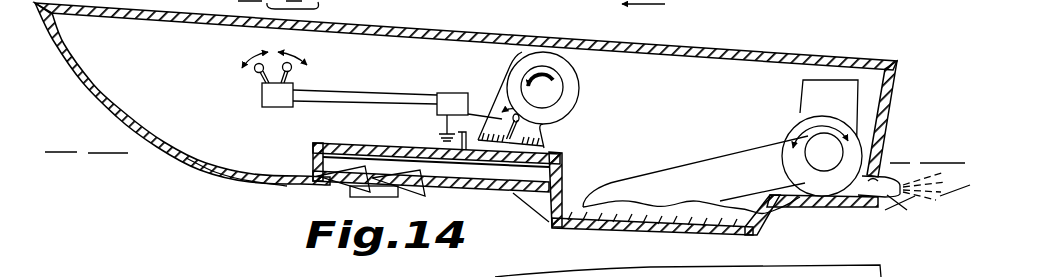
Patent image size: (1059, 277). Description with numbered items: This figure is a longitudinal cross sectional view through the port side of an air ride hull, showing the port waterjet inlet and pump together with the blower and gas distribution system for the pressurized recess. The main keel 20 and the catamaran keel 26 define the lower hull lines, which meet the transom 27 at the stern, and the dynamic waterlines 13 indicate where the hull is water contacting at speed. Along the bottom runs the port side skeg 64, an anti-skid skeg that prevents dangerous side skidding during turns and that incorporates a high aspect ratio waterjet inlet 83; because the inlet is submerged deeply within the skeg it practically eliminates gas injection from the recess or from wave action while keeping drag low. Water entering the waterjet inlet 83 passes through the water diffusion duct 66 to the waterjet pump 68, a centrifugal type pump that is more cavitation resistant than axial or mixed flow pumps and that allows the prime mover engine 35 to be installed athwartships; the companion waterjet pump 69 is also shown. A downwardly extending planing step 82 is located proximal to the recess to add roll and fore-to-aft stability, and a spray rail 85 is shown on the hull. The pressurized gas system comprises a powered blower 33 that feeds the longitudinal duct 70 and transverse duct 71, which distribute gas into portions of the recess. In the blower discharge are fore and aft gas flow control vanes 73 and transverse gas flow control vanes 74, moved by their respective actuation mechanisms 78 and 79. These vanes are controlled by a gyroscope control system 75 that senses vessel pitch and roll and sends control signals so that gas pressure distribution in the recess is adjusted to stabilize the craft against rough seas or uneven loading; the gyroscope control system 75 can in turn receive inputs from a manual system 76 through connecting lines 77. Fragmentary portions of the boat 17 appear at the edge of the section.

The dynamic waterline 13 is at (167, 153).
The boat 17 is at (624, 9).
The main keel 20 is at (97, 88).
The catamaran keel 26 is at (233, 180).
The transom 27 is at (902, 84).
The powered blower 33 is at (579, 86).
The prime mover engine 35 is at (847, 105).
The port side skeg 64 is at (770, 230).
The water diffusion duct 66 is at (730, 190).
The waterjet pump 68 is at (888, 205).
The waterjet pump 69 is at (710, 267).
The longitudinal duct 70 is at (347, 187).
The transverse duct 71 is at (436, 162).
The fore and aft gas flow control vanes 73 is at (547, 133).
The transverse gas flow control vanes 74 is at (540, 127).
The gyroscope control system 75 is at (443, 93).
The manual system 76 is at (262, 100).
The connecting lines 77 is at (343, 96).
The actuation mechanism 78 is at (440, 133).
The actuation mechanism 79 is at (502, 138).
The downwardly extending planing step 82 is at (390, 195).
The waterjet inlet 83 is at (668, 235).
The spray rail 85 is at (725, 5).